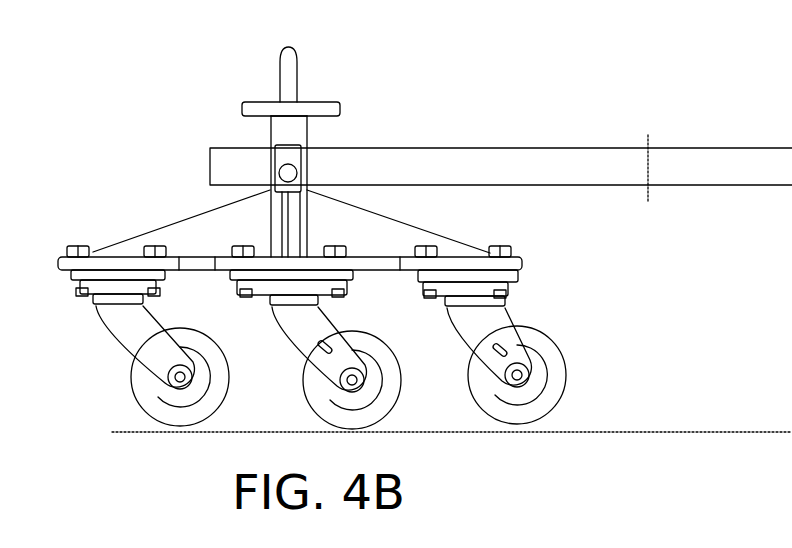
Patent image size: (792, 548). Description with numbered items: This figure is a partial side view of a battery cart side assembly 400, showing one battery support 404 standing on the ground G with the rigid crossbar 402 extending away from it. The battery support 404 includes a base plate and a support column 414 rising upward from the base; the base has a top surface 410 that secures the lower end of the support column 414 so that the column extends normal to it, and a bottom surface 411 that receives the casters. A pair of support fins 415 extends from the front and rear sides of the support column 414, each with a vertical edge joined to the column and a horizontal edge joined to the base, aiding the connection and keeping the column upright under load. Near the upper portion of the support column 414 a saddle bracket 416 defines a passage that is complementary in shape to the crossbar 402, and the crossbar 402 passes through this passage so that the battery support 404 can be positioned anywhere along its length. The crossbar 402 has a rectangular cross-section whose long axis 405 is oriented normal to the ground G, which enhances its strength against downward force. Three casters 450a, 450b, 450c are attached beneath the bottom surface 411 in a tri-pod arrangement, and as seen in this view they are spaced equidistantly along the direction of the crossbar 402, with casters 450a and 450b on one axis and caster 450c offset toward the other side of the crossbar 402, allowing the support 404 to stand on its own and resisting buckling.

The side assembly 400 is at (556, 56).
The rigid crossbar 402 is at (447, 168).
The battery support 404 is at (165, 103).
The long axis 405 is at (648, 135).
The top surface 410 is at (517, 256).
The bottom surface 411 is at (518, 278).
The support column 414 is at (270, 128).
The support fin 415 is at (500, 218).
The saddle bracket 416 is at (291, 73).
The caster 450a is at (160, 373).
The caster 450b is at (478, 369).
The caster 450c is at (335, 371).
The ground G is at (656, 432).